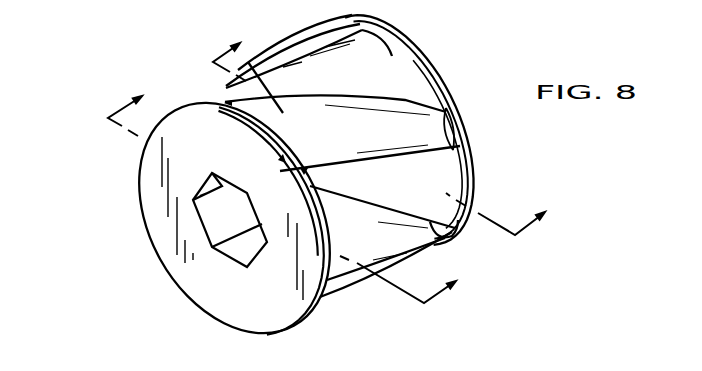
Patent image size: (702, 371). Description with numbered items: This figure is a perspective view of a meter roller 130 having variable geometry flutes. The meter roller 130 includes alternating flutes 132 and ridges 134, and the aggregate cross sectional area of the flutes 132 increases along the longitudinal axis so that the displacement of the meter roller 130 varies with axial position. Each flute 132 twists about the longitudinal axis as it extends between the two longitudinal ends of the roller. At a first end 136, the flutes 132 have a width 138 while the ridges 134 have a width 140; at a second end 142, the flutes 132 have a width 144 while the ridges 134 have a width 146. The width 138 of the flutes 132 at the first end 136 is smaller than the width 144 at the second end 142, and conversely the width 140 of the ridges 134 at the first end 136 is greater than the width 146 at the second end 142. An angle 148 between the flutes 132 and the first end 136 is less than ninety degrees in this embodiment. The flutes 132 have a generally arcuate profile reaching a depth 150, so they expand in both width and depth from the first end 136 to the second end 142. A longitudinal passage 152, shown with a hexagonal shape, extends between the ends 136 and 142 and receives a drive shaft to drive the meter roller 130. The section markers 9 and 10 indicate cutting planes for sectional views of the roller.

The meter roller 130 is at (138, 66).
The flutes 132 is at (262, 70).
The ridges 134 is at (406, 56).
The first end 136 is at (474, 171).
The width of the flutes at the first end 138 is at (466, 126).
The width of the ridges at the first end 140 is at (471, 188).
The second end 142 is at (255, 316).
The width of the flutes at the second end 144 is at (278, 130).
The width of the ridges at the second end 146 is at (308, 188).
The angle 148 is at (436, 102).
The depth 150 is at (443, 147).
The longitudinal passage 152 is at (214, 217).
The section line 9- 9 is at (379, 143).
The section line 10- 10 is at (268, 211).